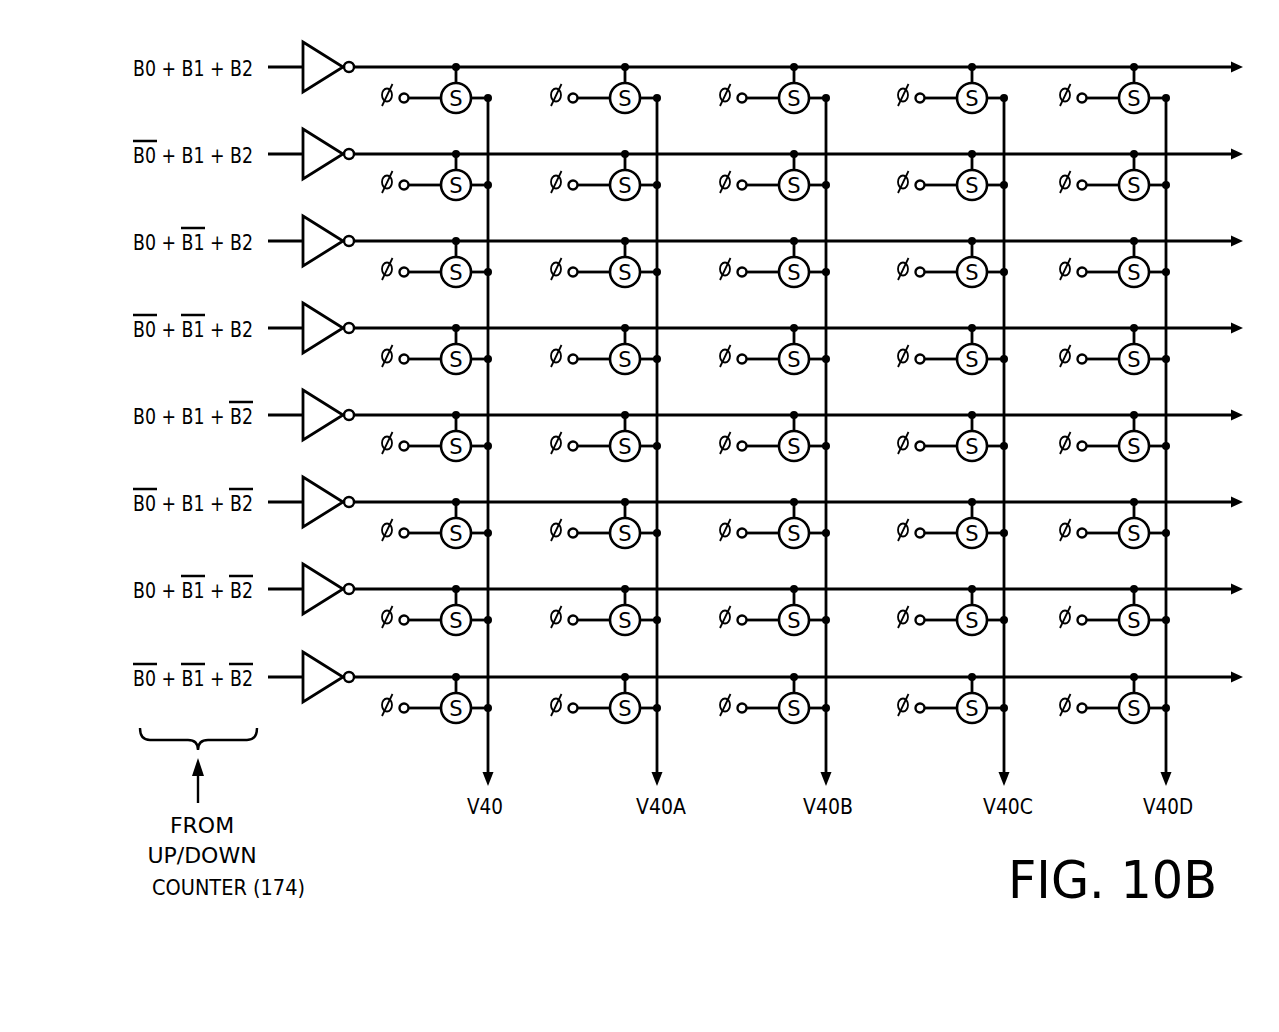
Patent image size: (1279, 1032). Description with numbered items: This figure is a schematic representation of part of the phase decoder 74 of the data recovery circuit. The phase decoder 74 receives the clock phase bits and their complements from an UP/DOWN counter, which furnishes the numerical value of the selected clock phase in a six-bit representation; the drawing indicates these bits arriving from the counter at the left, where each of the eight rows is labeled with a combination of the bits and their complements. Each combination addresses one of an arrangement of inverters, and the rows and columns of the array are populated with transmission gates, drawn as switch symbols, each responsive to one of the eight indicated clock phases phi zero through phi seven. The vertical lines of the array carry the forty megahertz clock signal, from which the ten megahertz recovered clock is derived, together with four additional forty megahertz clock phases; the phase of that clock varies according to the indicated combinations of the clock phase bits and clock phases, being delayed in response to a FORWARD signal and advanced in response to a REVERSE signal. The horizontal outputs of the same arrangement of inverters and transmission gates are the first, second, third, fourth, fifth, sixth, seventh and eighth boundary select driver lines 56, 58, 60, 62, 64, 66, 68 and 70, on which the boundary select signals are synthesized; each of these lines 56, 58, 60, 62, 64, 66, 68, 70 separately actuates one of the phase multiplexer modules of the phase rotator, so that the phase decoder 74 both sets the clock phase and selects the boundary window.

The first boundary select driver line 56 is at (798, 86).
The second boundary select driver line 58 is at (798, 173).
The third boundary select driver line 60 is at (798, 260).
The fourth boundary select driver line 62 is at (798, 347).
The fifth boundary select driver line 64 is at (798, 434).
The sixth boundary select driver line 66 is at (798, 521).
The seventh boundary select driver line 68 is at (798, 608).
The eighth boundary select driver line 70 is at (798, 696).
The phase decoder 74 is at (745, 843).